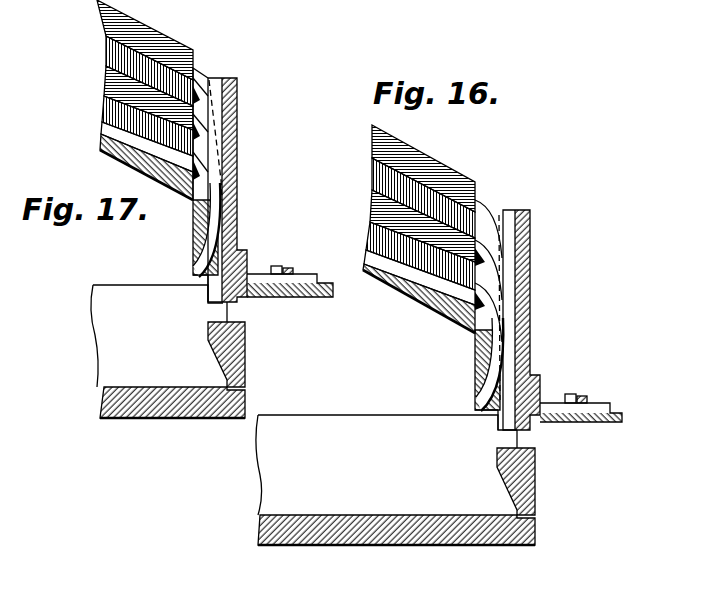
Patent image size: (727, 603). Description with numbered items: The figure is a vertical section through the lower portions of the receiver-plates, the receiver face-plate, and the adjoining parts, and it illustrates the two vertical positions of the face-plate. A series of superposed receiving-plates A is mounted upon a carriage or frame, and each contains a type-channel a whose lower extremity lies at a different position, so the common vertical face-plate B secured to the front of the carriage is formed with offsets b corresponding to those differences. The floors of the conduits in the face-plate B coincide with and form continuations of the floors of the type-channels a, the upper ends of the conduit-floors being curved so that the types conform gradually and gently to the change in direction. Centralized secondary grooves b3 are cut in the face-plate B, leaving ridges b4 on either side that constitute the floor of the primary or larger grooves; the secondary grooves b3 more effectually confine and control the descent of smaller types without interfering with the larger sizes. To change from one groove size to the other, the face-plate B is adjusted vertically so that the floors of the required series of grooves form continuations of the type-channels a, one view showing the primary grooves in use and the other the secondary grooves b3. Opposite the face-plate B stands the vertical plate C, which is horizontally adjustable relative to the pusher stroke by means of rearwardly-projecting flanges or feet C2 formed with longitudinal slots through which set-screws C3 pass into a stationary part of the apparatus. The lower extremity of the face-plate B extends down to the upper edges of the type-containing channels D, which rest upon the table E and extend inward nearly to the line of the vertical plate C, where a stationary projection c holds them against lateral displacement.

In FIG. 17, the receiving-plates A is at (137, 78).
In FIG. 16, the receiving-plates A is at (410, 207).
In FIG. 17, the type-channels a is at (146, 161).
In FIG. 16, the type-channels a is at (419, 291).
In FIG. 17, the face-plate B is at (210, 75).
In FIG. 16, the face-plate B is at (483, 208).
In FIG. 17, the offsets b is at (200, 129).
In FIG. 16, the offsets b is at (488, 291).
In FIG. 17, the secondary grooves b3 is at (219, 224).
In FIG. 16, the secondary grooves b3 is at (474, 360).
In FIG. 17, the ridges b4 is at (227, 201).
In FIG. 16, the ridges b4 is at (509, 349).
In FIG. 17, the plate C is at (231, 190).
In FIG. 16, the plate C is at (523, 320).
In FIG. 17, the flanges or feet C2 is at (306, 273).
In FIG. 16, the flanges or feet C2 is at (603, 402).
In FIG. 17, the set-screws C3 is at (277, 265).
In FIG. 16, the set-screws C3 is at (576, 389).
In FIG. 17, the type-containing channels D is at (157, 336).
In FIG. 16, the type-containing channels D is at (386, 465).
In FIG. 17, the die shoulder c is at (226, 344).
In FIG. 16, the die shoulder c is at (516, 472).
In FIG. 17, the table E is at (172, 415).
In FIG. 16, the table E is at (396, 543).